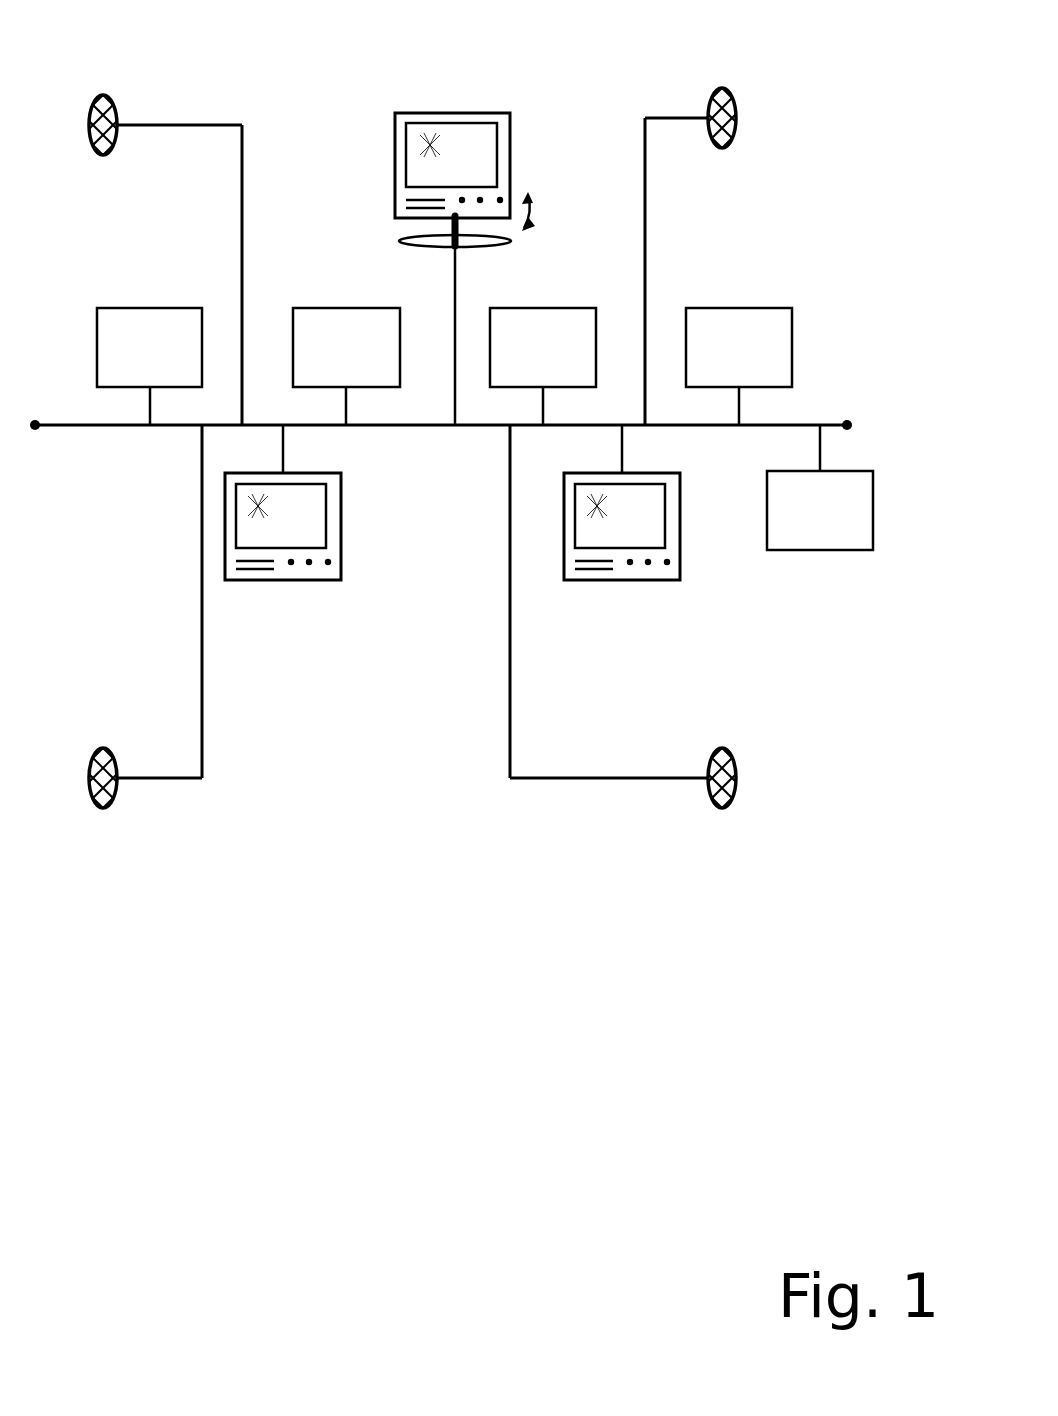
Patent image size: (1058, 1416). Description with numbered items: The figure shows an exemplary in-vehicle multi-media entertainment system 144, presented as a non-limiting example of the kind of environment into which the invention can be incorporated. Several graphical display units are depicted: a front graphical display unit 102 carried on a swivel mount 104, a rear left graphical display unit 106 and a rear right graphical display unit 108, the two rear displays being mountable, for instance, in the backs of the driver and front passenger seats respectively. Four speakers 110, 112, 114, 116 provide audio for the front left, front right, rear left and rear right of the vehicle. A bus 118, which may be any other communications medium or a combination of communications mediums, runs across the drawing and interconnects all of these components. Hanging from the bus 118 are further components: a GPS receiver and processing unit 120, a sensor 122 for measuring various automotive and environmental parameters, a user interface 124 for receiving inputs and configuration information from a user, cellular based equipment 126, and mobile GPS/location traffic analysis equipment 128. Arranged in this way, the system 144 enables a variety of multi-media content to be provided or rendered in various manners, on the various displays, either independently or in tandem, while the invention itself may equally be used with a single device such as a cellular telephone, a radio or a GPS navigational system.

The mobile computing system 144 is at (181, 37).
The front graphical display unit 102 is at (425, 112).
The swivel mount 104 is at (405, 236).
The rear left graphical display unit 106 is at (343, 509).
The rear right graphical display unit 108 is at (682, 509).
The speaker 110 is at (115, 148).
The speaker 112 is at (733, 138).
The speaker 114 is at (118, 800).
The speaker 116 is at (735, 788).
The bus 118 is at (135, 432).
The GPS receiver and processing unit 120 is at (130, 308).
The sensor 122 is at (337, 308).
The user interface 124 is at (572, 308).
The cellular based equipment 126 is at (775, 308).
The mobile GPS/location traffic analysis equipment 128 is at (873, 488).